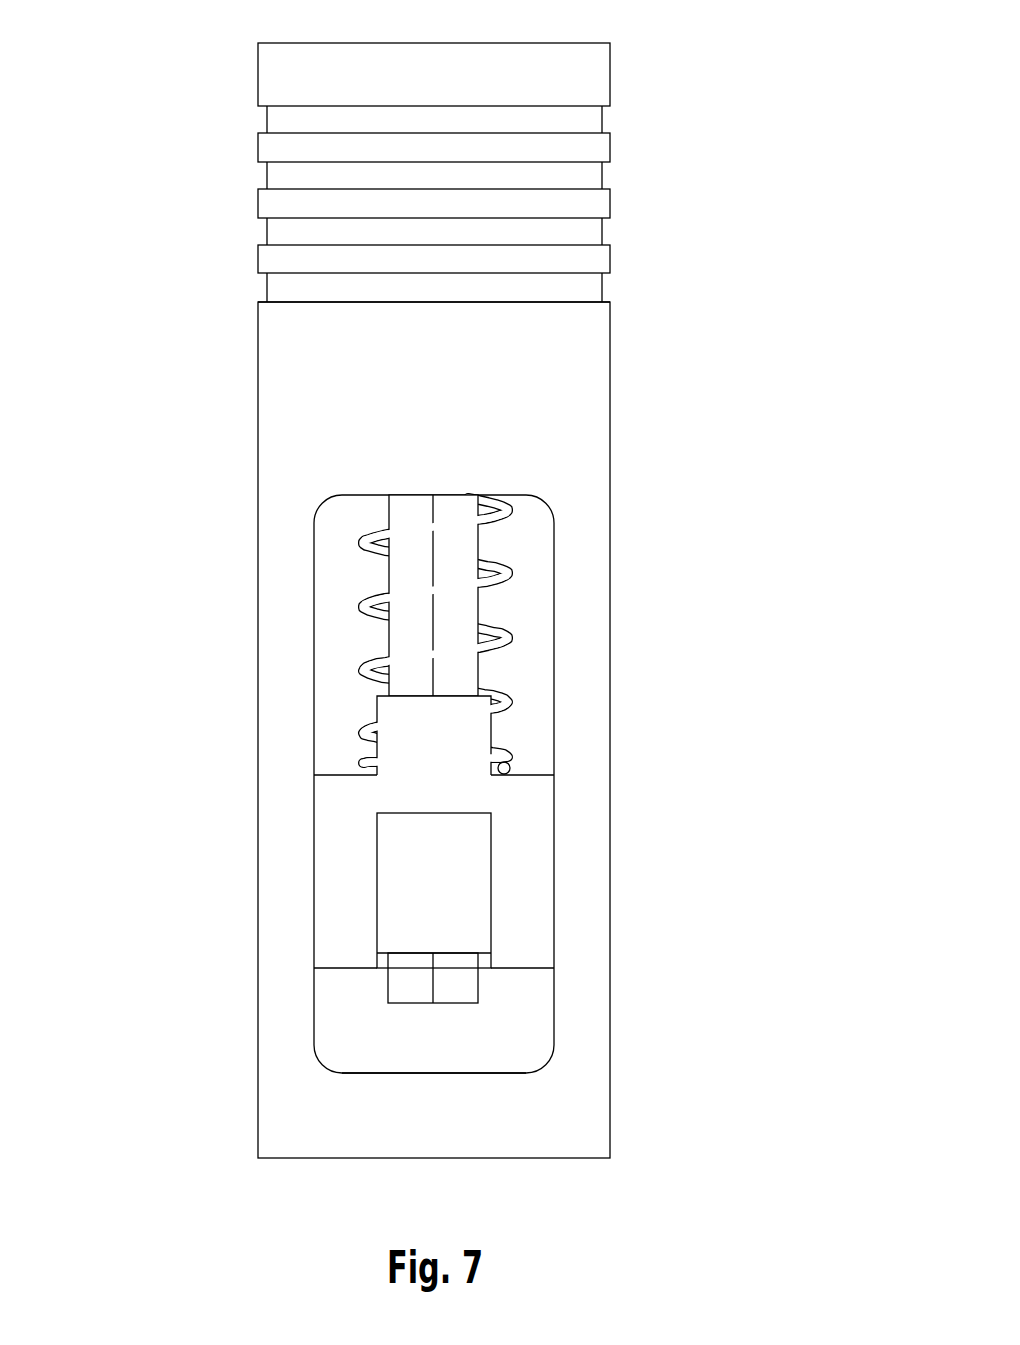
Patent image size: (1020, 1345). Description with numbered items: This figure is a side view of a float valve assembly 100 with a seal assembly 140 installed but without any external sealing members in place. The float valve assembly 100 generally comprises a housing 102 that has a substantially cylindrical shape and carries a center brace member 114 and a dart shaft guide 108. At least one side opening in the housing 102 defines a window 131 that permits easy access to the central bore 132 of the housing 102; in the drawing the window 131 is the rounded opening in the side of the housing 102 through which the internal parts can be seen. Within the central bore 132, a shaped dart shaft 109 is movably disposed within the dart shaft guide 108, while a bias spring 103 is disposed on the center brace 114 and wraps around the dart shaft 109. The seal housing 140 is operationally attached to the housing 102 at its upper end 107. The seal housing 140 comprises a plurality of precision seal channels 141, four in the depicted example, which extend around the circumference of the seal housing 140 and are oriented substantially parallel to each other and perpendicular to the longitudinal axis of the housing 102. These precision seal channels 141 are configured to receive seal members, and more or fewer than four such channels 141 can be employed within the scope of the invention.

The float valve assembly 100 is at (436, 579).
The housing 102 is at (568, 412).
The bias spring 103 is at (478, 648).
The upper end 107 is at (533, 300).
The dart shaft guide 108 is at (483, 735).
The shaped dart shaft 109 is at (400, 637).
The center brace member 114 is at (328, 863).
The window 131 is at (510, 1073).
The central bore 132 is at (347, 703).
The seal housing 140 is at (588, 77).
The precision seal channels 141 is at (290, 283).